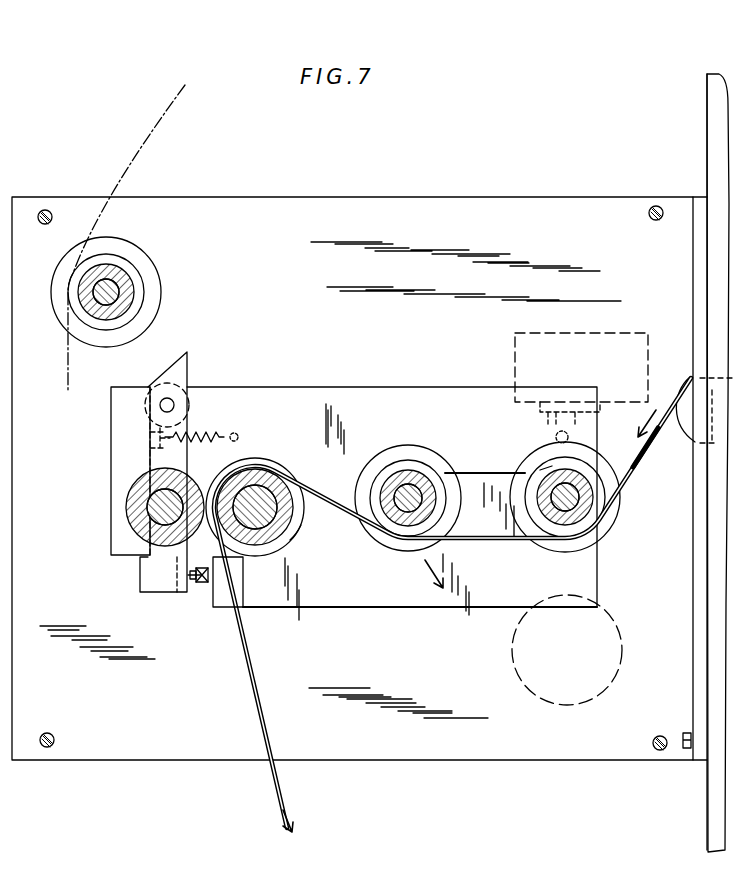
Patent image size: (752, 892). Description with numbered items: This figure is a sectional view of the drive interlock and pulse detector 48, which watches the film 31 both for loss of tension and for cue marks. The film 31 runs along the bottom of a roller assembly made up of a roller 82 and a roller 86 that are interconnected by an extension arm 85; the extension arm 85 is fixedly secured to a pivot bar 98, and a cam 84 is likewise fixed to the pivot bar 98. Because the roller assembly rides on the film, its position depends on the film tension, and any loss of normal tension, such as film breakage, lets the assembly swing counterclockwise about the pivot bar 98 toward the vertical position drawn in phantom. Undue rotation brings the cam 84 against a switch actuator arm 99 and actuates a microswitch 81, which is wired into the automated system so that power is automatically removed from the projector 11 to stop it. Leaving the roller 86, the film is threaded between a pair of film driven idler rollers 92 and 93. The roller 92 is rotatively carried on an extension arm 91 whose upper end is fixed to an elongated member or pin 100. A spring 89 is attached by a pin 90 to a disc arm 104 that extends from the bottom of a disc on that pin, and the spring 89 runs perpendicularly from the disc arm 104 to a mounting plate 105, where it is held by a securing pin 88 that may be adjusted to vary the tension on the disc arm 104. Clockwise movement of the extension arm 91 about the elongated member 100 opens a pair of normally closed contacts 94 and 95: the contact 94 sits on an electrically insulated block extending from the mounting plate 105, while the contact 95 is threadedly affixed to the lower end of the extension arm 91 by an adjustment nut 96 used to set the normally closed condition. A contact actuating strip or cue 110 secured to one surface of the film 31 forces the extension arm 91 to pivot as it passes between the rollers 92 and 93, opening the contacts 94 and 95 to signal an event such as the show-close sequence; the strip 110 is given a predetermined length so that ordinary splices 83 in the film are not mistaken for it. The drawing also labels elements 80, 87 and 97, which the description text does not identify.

The projector 11 is at (706, 123).
The drive interlock and pulse detector 48 is at (359, 464).
The supply reel roller 80 is at (131, 251).
The microswitch 81 is at (636, 333).
The mounting plate 105 is at (380, 387).
The film 31 is at (682, 396).
The elongated member or pin 100 is at (160, 405).
The pin 90 is at (150, 432).
The disc arm 104 is at (150, 448).
The spring 89 is at (202, 436).
The securing pin 88 is at (239, 433).
The capstan roller 87 is at (290, 462).
The film driven idler roller 93 is at (297, 538).
The roller 86 is at (386, 453).
The extension arm 85 is at (472, 478).
The cam 84 is at (548, 468).
The switch actuator arm 99 is at (556, 434).
The roller 82 is at (595, 463).
The pivot bar 98 is at (598, 522).
The splices 83 is at (641, 441).
The extension arm 91 is at (150, 468).
The film driven idler roller 92 is at (127, 512).
The contact 94 is at (216, 592).
The contact 95 is at (202, 585).
The adjustment nut 96 is at (196, 578).
The base rail 97 is at (243, 600).
The contact actuating strip or cue 110 is at (256, 718).